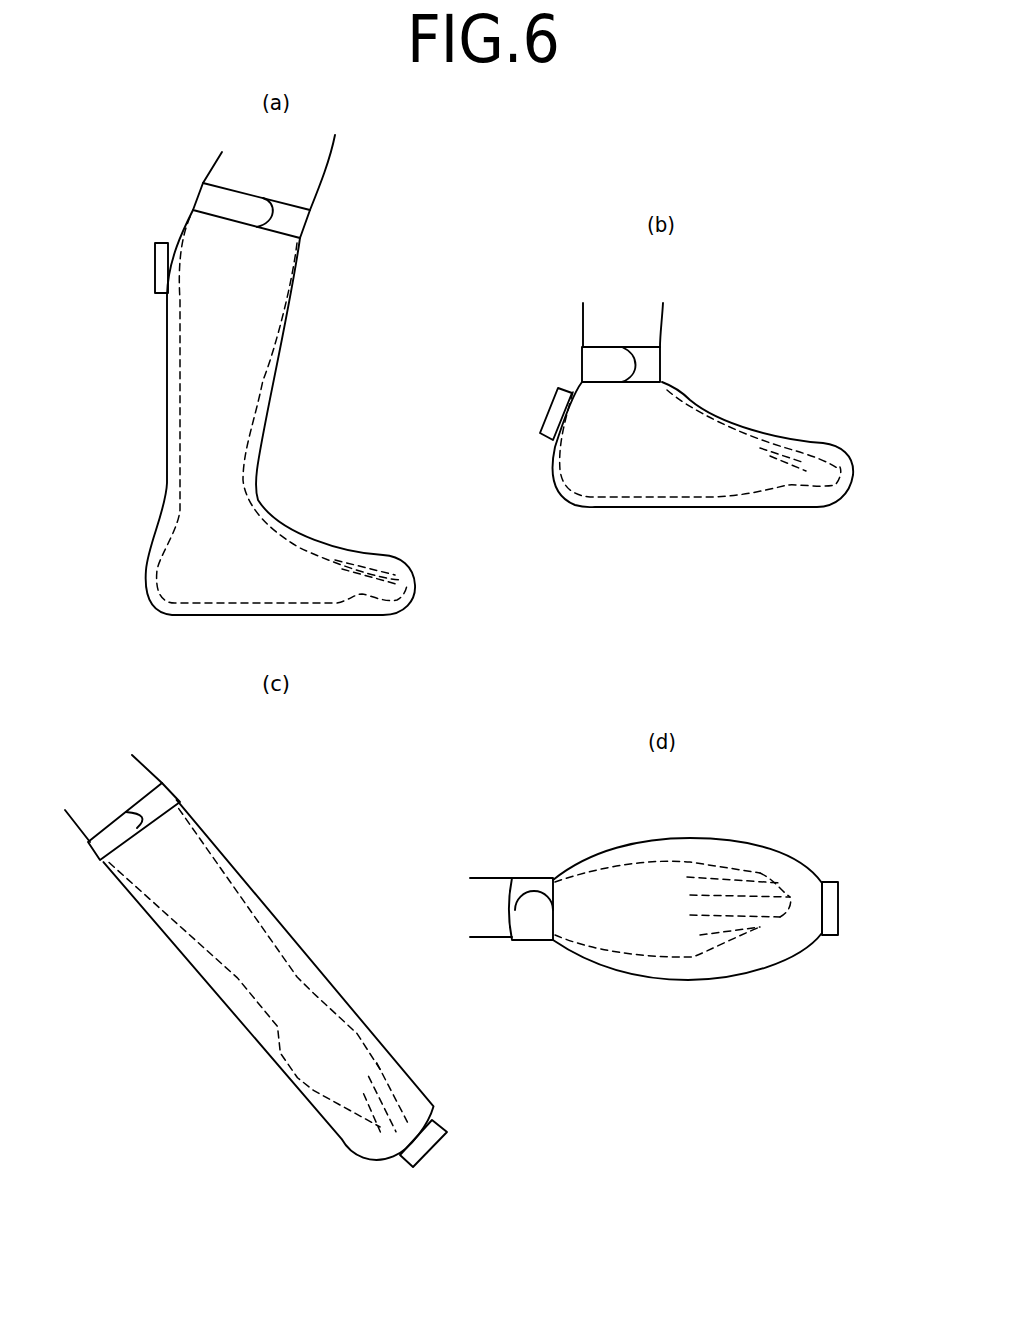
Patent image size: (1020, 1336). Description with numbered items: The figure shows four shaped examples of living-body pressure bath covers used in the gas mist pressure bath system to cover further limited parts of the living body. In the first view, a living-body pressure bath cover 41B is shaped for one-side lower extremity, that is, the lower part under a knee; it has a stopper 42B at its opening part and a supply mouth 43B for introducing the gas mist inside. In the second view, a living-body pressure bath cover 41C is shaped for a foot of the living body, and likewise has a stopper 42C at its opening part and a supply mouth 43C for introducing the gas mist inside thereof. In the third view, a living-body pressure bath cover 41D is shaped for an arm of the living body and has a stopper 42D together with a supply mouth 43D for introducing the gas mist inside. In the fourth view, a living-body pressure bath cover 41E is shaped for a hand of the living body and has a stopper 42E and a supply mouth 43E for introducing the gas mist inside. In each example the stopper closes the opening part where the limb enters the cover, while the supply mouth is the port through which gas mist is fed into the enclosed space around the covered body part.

The living-body pressure bath cover 41B is at (362, 198).
The stopper 42B is at (306, 222).
The supply mouth 43B is at (155, 262).
The living-body pressure bath cover 41C is at (777, 340).
The stopper 42C is at (580, 360).
The supply mouth 43C is at (550, 407).
The living-body pressure bath cover 41D is at (290, 805).
The stopper 42D is at (166, 785).
The supply mouth 43D is at (438, 1123).
The living-body pressure bath cover 41E is at (783, 840).
The stopper 42E is at (527, 877).
The supply mouth 43E is at (829, 936).